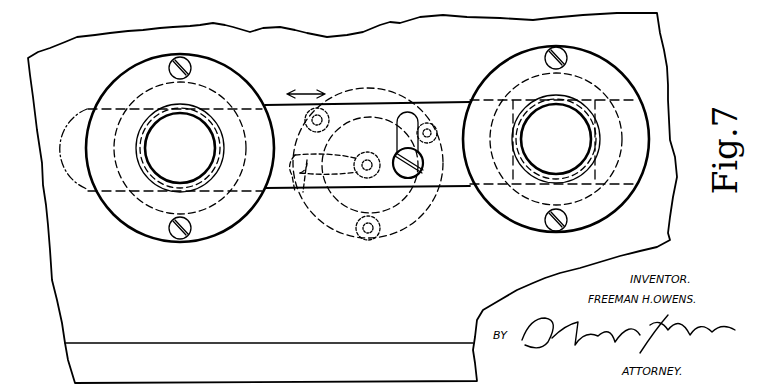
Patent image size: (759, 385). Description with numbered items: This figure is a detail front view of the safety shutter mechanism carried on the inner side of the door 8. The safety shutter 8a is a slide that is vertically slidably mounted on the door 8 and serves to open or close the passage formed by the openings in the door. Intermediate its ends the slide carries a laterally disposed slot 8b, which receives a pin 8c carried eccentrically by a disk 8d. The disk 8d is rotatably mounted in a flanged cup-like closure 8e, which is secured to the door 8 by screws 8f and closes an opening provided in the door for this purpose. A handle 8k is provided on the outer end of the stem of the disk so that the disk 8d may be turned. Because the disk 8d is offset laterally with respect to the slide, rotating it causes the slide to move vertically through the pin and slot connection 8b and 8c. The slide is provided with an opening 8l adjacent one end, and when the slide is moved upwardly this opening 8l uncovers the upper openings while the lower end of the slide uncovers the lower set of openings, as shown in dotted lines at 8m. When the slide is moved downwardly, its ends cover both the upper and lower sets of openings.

The door 8 is at (63, 295).
The safety shutter 8a is at (447, 112).
The slot 8b is at (400, 125).
The pin 8c is at (420, 176).
The disk 8d is at (352, 116).
The flanged cup-like closure 8e is at (355, 88).
The screws 8f is at (364, 241).
The handle 8k is at (297, 190).
The opening 8l is at (272, 107).
The dotted line position of slide 8m is at (45, 130).